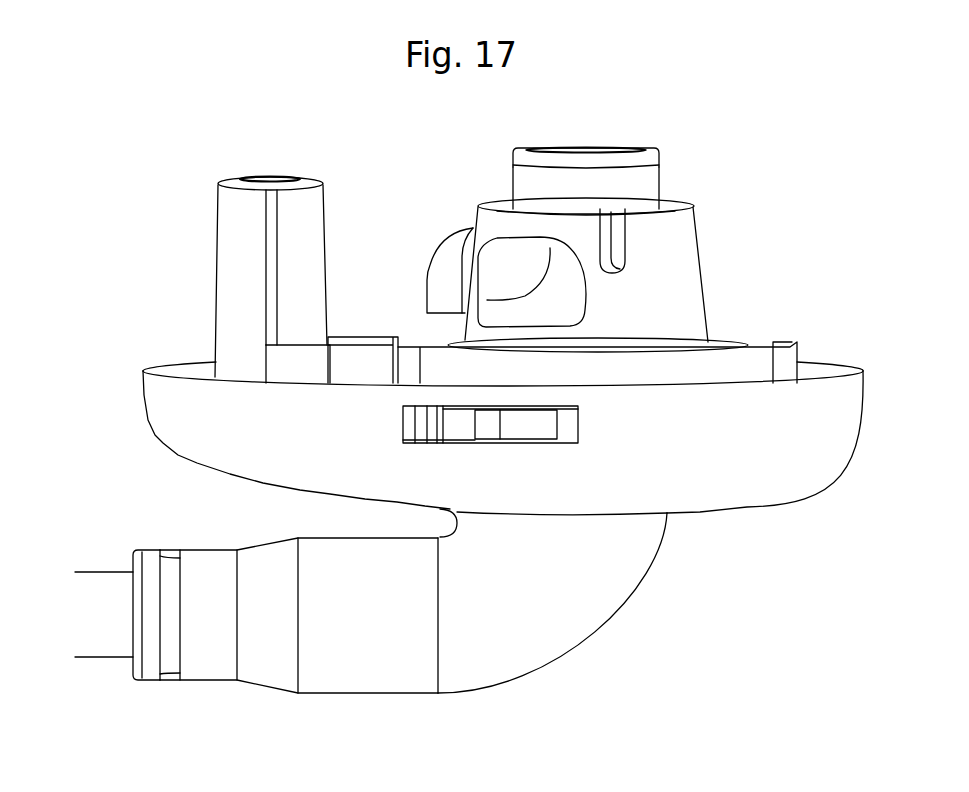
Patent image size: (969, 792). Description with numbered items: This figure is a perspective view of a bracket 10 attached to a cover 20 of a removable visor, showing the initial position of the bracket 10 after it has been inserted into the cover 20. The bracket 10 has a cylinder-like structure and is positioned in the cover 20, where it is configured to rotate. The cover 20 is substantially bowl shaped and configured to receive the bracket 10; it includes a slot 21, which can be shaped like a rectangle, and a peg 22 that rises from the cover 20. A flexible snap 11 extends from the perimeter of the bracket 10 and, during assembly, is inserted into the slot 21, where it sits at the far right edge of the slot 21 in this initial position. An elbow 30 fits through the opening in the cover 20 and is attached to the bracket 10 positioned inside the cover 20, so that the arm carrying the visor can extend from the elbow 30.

The bracket 10 is at (592, 187).
The flexible snap 11 is at (522, 428).
The cover 20 is at (827, 447).
The slot 21 is at (402, 422).
The peg 22 is at (233, 224).
The elbow 30 is at (608, 598).